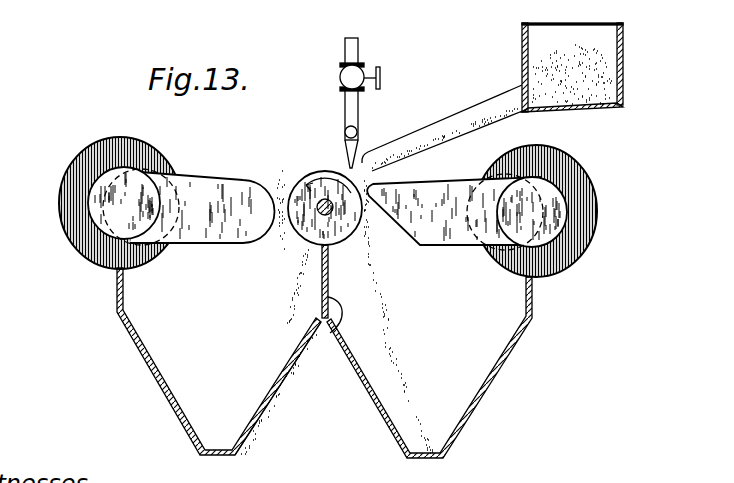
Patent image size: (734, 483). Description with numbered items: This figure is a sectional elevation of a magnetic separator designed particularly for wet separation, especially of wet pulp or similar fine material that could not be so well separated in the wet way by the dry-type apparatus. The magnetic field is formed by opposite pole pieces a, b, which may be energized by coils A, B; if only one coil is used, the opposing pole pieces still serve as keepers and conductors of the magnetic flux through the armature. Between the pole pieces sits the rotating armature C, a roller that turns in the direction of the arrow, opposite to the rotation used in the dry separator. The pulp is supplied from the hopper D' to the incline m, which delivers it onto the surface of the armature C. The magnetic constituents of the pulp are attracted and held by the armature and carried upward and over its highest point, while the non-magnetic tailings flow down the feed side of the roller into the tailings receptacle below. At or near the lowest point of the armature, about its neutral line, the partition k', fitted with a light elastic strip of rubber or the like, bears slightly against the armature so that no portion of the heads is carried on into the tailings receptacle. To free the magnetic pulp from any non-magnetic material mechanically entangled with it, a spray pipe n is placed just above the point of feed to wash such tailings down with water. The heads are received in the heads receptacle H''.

The coil A is at (146, 203).
The pole piece a is at (202, 207).
The coil B is at (496, 211).
The pole piece b is at (453, 211).
The armature C is at (304, 177).
The hopper D' is at (592, 67).
The incline m is at (437, 132).
The spray pipe n is at (344, 118).
The partition k' is at (288, 376).
The heads receptacle H'' is at (219, 361).